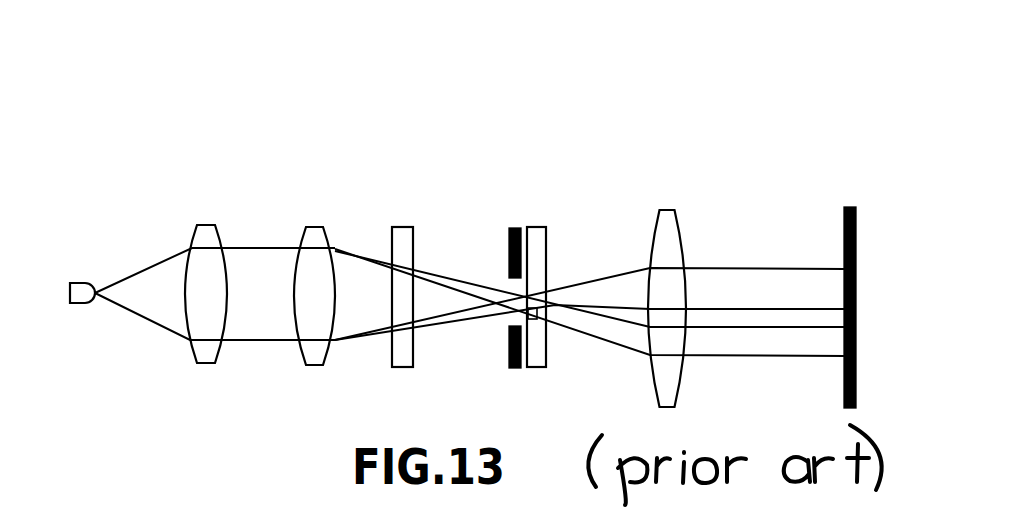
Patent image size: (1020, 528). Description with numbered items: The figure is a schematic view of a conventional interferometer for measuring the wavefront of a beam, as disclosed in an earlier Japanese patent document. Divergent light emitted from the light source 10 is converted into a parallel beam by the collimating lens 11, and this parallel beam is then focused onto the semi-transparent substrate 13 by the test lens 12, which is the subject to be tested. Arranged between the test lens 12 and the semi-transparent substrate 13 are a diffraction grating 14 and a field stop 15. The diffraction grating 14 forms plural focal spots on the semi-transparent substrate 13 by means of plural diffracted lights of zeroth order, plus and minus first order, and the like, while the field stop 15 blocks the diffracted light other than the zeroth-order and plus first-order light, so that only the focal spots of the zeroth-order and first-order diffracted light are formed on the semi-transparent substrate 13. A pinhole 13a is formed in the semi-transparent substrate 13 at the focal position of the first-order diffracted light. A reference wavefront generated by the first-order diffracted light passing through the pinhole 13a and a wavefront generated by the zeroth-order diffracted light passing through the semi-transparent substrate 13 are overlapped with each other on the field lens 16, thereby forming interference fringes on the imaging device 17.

The light source 10 is at (80, 283).
The collimating lens 11 is at (210, 223).
The test lens 12 is at (312, 225).
The semi-transparent substrate 13 is at (538, 225).
The pinhole 13a is at (512, 318).
The diffraction grating 14 is at (405, 225).
The field stop 15 is at (515, 227).
The field lens 16 is at (668, 207).
The imaging device 17 is at (850, 206).